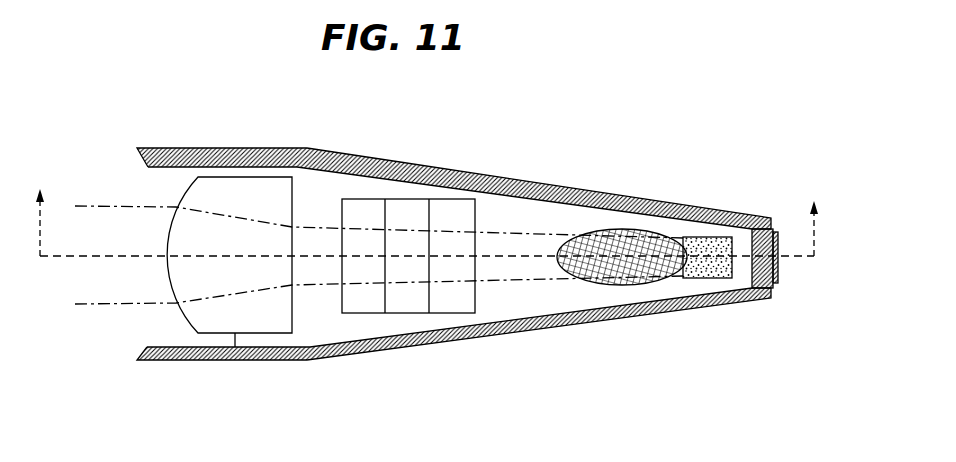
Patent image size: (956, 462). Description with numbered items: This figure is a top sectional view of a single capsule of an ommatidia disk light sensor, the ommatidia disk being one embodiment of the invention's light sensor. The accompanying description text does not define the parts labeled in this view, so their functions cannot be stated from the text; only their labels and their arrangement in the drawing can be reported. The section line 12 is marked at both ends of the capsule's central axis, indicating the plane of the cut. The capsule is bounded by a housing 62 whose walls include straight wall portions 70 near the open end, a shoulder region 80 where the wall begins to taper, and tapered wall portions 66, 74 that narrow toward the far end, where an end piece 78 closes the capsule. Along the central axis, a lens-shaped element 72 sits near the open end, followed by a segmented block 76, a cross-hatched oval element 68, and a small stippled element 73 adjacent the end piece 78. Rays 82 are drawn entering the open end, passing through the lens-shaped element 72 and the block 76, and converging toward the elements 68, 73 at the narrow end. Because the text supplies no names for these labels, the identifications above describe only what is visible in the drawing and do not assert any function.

The section line 12- 12 is at (430, 209).
The optical head housing 62 is at (422, 256).
The tapered housing wall 66 is at (578, 190).
The photodetector 68 is at (620, 286).
The cylindrical housing walls 70 is at (190, 148).
The lens 72 is at (228, 360).
The light source 73 is at (700, 239).
The lower tapered wall 74 is at (512, 334).
The filter 76 is at (403, 314).
The end plug 78 is at (779, 283).
The housing shoulder 80 is at (387, 162).
The light rays 82 is at (106, 303).